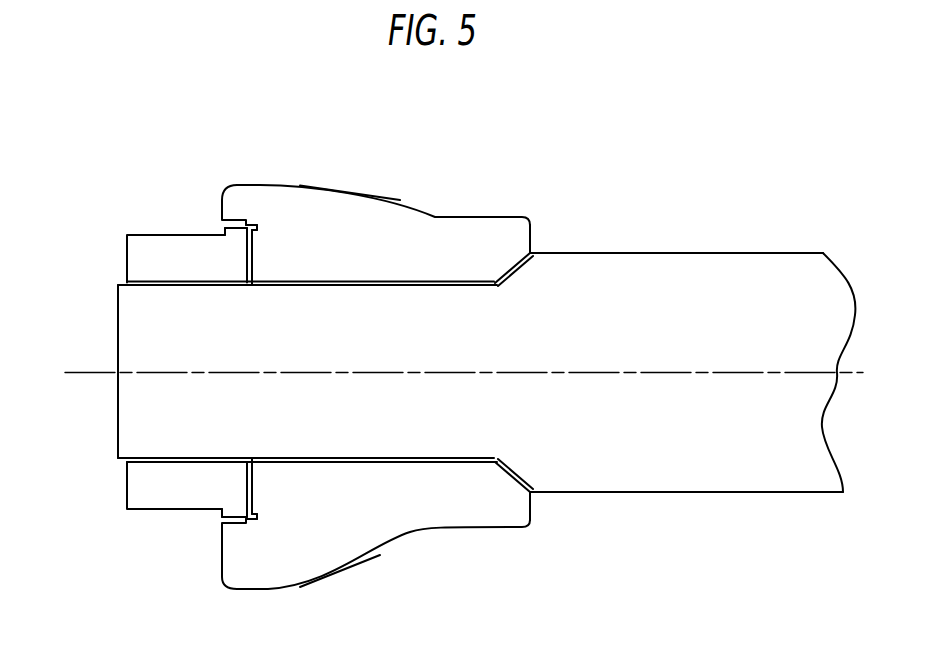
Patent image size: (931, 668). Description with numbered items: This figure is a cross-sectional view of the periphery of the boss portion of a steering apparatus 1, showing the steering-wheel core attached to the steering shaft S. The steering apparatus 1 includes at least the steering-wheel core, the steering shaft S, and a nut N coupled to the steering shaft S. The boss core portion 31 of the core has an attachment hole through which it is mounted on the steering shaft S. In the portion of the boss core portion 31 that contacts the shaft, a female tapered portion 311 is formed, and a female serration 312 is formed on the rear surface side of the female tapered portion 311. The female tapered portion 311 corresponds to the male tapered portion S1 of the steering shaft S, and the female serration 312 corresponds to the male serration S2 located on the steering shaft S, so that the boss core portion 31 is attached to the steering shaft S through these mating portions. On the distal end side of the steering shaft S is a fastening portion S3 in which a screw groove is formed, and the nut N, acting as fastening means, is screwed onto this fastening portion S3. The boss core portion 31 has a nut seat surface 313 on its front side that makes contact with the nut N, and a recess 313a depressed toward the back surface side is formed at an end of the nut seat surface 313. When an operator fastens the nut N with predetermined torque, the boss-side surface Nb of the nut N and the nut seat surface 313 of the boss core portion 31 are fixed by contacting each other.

The steering apparatus 1 is at (113, 128).
The steering shaft S is at (722, 288).
The male tapered portion S1 is at (513, 263).
The male serration S2 is at (380, 287).
The fastening portion S3 is at (160, 330).
The nut N is at (153, 242).
The boss-side surface Nb is at (247, 260).
The boss core portion 31 is at (340, 227).
The female tapered portion 311 is at (513, 263).
The female serration 312 is at (336, 281).
The nut seat surface 313 is at (247, 249).
The recess 313a is at (255, 222).